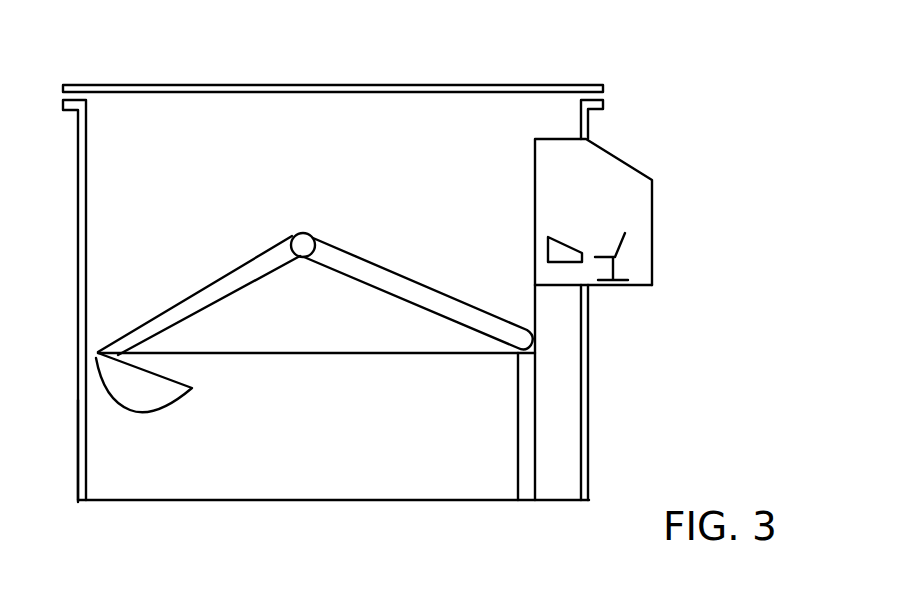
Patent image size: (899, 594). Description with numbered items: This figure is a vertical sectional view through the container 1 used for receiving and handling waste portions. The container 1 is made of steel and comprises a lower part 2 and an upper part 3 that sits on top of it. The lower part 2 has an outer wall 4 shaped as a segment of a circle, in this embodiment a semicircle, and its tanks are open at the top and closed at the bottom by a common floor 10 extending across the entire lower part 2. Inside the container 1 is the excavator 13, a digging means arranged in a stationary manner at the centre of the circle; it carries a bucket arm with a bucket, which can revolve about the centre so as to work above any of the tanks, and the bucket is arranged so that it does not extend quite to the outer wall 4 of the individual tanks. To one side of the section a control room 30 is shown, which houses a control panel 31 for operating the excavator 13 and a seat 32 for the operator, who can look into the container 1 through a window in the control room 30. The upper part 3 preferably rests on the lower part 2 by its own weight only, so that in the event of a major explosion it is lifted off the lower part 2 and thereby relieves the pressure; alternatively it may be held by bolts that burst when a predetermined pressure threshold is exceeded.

The container 1 is at (672, 91).
The lower part 2 is at (78, 183).
The upper part 3 is at (375, 85).
The outer wall 4 is at (80, 409).
The floor 10 is at (357, 500).
The excavator 13 is at (638, 283).
The control room 30 is at (652, 182).
The control panel 31 is at (558, 239).
The seat 32 is at (624, 241).